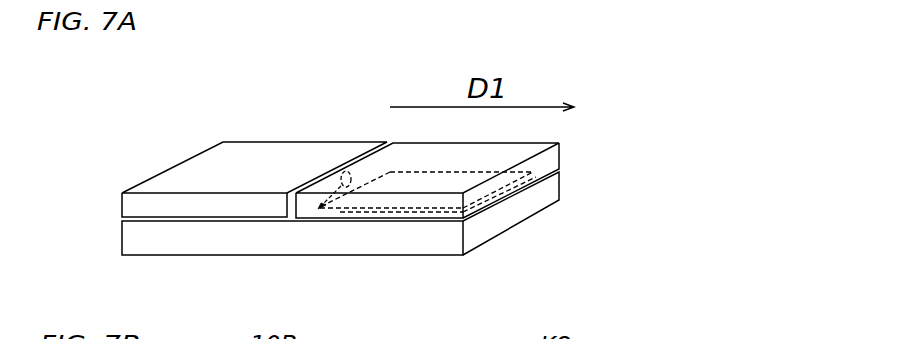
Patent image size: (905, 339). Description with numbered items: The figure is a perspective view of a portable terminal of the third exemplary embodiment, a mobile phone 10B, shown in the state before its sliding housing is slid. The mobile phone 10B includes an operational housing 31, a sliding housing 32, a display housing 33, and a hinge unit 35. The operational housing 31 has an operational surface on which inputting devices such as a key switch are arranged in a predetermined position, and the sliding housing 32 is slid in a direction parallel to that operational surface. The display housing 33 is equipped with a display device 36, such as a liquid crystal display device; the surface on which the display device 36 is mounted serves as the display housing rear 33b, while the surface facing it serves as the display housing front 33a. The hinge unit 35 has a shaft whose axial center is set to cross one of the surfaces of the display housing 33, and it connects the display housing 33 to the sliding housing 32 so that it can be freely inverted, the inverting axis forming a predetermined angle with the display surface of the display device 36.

The mobile phone 10B is at (350, 128).
The operational housing 31 is at (178, 240).
The sliding housing 32 is at (200, 172).
The display housing 33 is at (553, 160).
The display housing front 33a is at (527, 147).
The display housing rear 33b is at (550, 182).
The hinge unit 35 is at (345, 188).
The display device 36 is at (513, 200).